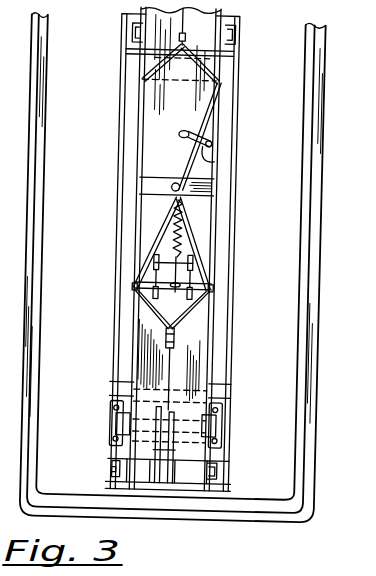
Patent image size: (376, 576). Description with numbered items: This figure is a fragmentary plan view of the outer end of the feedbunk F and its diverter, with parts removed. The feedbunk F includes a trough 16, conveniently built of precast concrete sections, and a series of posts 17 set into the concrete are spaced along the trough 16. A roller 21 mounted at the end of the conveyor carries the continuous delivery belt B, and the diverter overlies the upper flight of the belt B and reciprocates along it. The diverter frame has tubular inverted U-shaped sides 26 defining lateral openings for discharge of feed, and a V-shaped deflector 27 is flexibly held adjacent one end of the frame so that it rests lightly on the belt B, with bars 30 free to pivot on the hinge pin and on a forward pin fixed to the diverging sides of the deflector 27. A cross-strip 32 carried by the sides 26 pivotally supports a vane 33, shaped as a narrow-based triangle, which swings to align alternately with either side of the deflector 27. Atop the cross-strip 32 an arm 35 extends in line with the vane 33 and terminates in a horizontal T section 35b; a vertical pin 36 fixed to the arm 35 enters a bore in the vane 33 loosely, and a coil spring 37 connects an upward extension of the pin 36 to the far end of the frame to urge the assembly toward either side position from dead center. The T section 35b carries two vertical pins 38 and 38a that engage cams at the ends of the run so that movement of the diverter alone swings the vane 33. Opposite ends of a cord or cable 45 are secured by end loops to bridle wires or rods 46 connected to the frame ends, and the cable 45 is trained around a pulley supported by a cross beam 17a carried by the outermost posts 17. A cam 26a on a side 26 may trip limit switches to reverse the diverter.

The feedbunk F is at (320, 287).
The trough 16 is at (273, 450).
The posts 17 is at (230, 30).
The cross beam 17a is at (212, 490).
The roller 21 is at (132, 411).
The tubular inverted U-shaped sides 26 is at (133, 230).
The cam 26a is at (135, 197).
The V-shaped deflector 27 is at (198, 249).
The bars 30 is at (208, 270).
The cross-strip 32 is at (150, 186).
The vane 33 is at (205, 110).
The arm 35 is at (180, 167).
The T section 35b is at (209, 163).
The vertical pin 36 is at (176, 134).
The coil spring 37 is at (191, 233).
The vertical pin 38 is at (210, 145).
The vertical pin 38a is at (209, 131).
The cord or cable 45 is at (172, 372).
The bridle wires or rods 46 is at (186, 328).
The delivery belt B is at (152, 368).